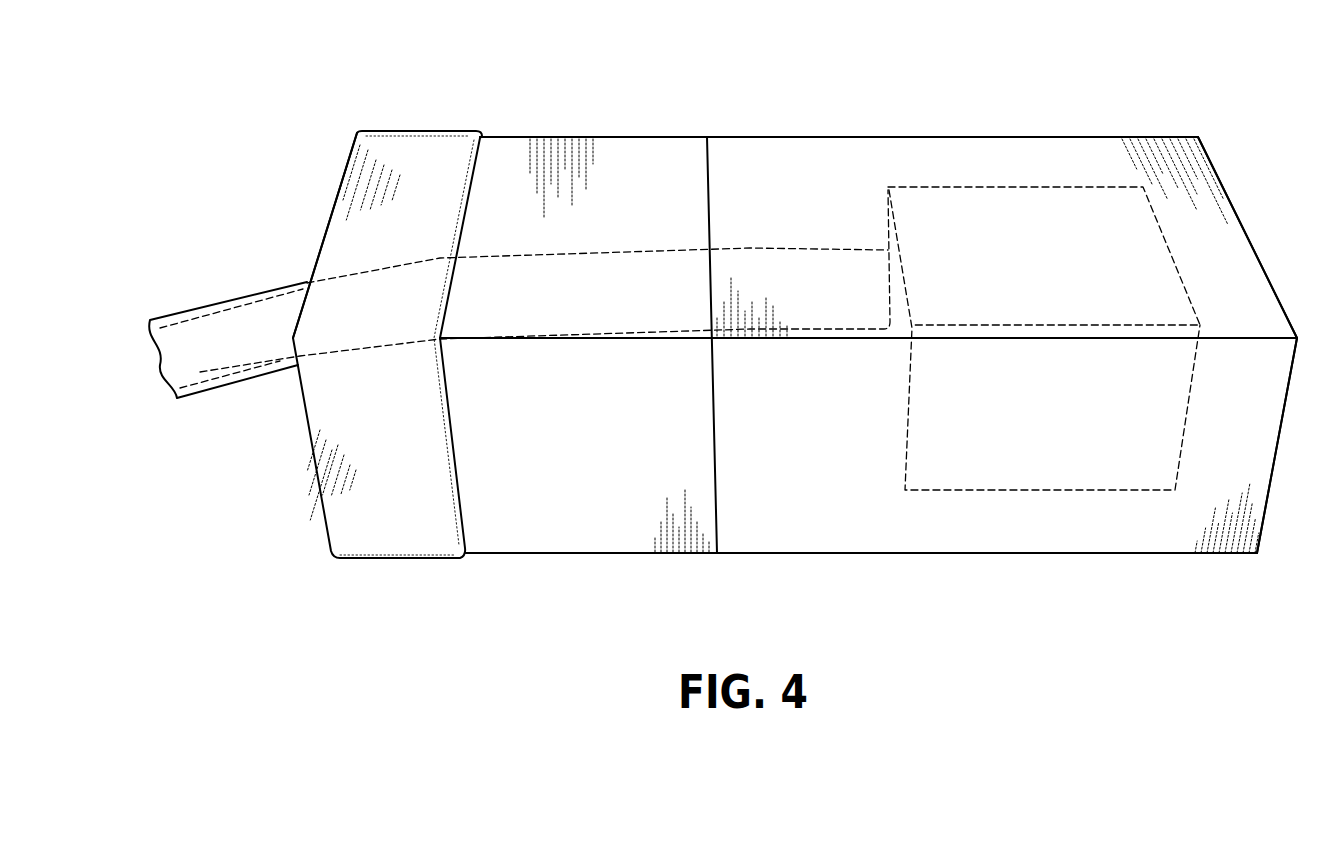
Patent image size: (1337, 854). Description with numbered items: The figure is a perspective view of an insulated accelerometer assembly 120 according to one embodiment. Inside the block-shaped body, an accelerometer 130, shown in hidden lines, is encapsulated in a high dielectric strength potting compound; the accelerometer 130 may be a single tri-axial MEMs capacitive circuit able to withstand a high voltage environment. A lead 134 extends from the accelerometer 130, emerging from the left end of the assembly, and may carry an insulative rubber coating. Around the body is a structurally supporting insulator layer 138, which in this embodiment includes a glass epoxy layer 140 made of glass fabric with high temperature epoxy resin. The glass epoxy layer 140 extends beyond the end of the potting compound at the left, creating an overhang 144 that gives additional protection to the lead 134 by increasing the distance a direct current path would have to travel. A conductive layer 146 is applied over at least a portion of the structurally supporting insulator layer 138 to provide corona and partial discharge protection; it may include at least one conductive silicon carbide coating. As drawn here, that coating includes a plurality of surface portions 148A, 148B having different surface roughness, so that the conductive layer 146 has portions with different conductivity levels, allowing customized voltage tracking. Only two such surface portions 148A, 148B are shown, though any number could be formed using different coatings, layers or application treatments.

The insulated accelerometer assembly 120 is at (626, 135).
The accelerometer 130 is at (980, 218).
The lead 134 is at (252, 330).
The structurally supporting insulator layer 138 is at (387, 308).
The glass epoxy layer 140 is at (430, 148).
The overhang 144 is at (374, 200).
The conductive layer 146 is at (1082, 137).
The surface portion 148A is at (635, 520).
The surface portion 148B is at (1187, 213).